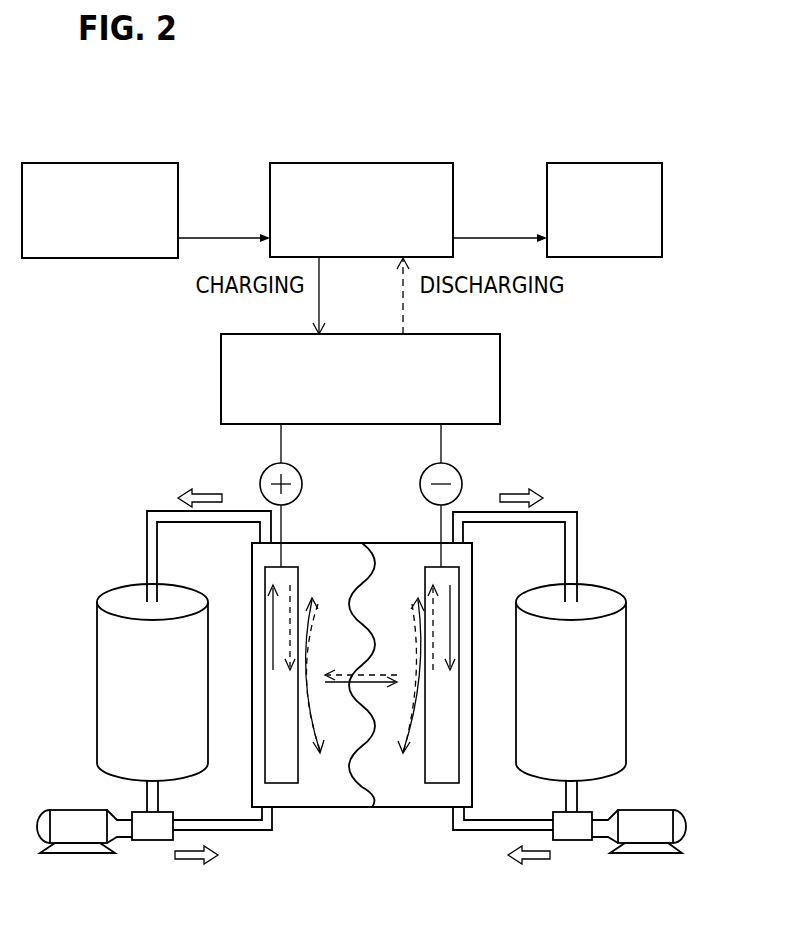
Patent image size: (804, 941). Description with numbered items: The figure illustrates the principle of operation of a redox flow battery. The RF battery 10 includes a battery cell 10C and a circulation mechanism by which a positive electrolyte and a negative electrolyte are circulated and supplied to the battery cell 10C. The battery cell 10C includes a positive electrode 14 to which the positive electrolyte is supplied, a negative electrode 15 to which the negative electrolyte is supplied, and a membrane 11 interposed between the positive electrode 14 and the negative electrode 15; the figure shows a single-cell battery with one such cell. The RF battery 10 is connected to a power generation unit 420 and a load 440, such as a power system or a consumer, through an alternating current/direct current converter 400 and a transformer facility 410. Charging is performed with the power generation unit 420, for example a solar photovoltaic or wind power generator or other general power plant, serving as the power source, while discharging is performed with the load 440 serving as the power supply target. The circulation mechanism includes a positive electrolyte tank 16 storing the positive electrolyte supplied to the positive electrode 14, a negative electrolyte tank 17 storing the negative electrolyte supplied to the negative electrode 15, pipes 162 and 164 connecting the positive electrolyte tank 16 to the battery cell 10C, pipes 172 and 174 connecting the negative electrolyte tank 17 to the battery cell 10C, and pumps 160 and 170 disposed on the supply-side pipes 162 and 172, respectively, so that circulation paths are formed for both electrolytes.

The RF battery 10 is at (599, 510).
The battery cell 10C is at (348, 540).
The membrane 11 is at (372, 796).
The positive electrode 14 is at (263, 772).
The negative electrode 15 is at (462, 772).
The positive electrolyte tank 16 is at (117, 597).
The negative electrolyte tank 17 is at (615, 598).
The pump 160 is at (65, 810).
The pipe 162 is at (243, 830).
The pipe 164 is at (160, 511).
The pump 170 is at (660, 810).
The pipe 172 is at (487, 830).
The pipe 174 is at (563, 512).
The alternating current/direct current converter 400 is at (437, 333).
The transformer facility 410 is at (443, 163).
The power generation unit 420 is at (130, 163).
The load 440 is at (602, 163).